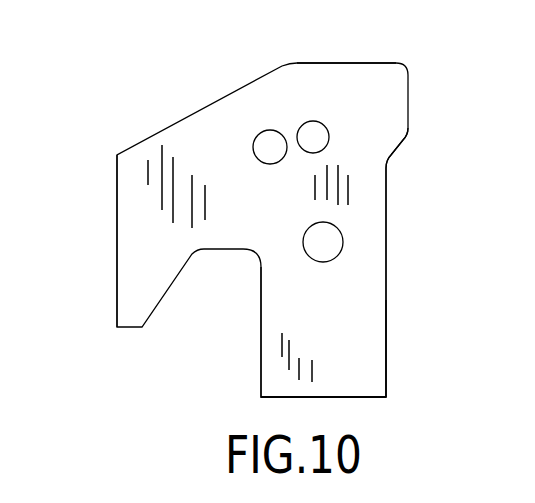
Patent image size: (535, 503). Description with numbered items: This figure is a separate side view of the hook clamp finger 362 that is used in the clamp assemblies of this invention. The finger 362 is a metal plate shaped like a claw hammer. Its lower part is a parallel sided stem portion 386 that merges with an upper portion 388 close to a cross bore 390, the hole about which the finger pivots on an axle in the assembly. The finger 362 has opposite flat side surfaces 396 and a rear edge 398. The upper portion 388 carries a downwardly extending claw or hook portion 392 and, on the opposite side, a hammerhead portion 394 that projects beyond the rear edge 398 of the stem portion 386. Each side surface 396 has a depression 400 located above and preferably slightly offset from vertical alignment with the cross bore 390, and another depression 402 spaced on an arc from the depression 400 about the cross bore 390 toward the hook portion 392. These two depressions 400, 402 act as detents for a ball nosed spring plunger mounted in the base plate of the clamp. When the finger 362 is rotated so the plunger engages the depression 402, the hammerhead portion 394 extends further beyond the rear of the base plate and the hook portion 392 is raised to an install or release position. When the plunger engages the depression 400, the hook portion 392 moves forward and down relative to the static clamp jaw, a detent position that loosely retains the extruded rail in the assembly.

The hook clamp finger 362 is at (454, 161).
The parallel sided stem portion 386 is at (412, 303).
The upper portion 388 is at (396, 203).
The cross bore 390 is at (343, 240).
The hook portion 392 is at (130, 292).
The hammerhead portion 394 is at (407, 73).
The flat side surface 396 is at (342, 331).
The rear edge 398 is at (387, 363).
The depression 400 is at (312, 121).
The depression 402 is at (262, 131).